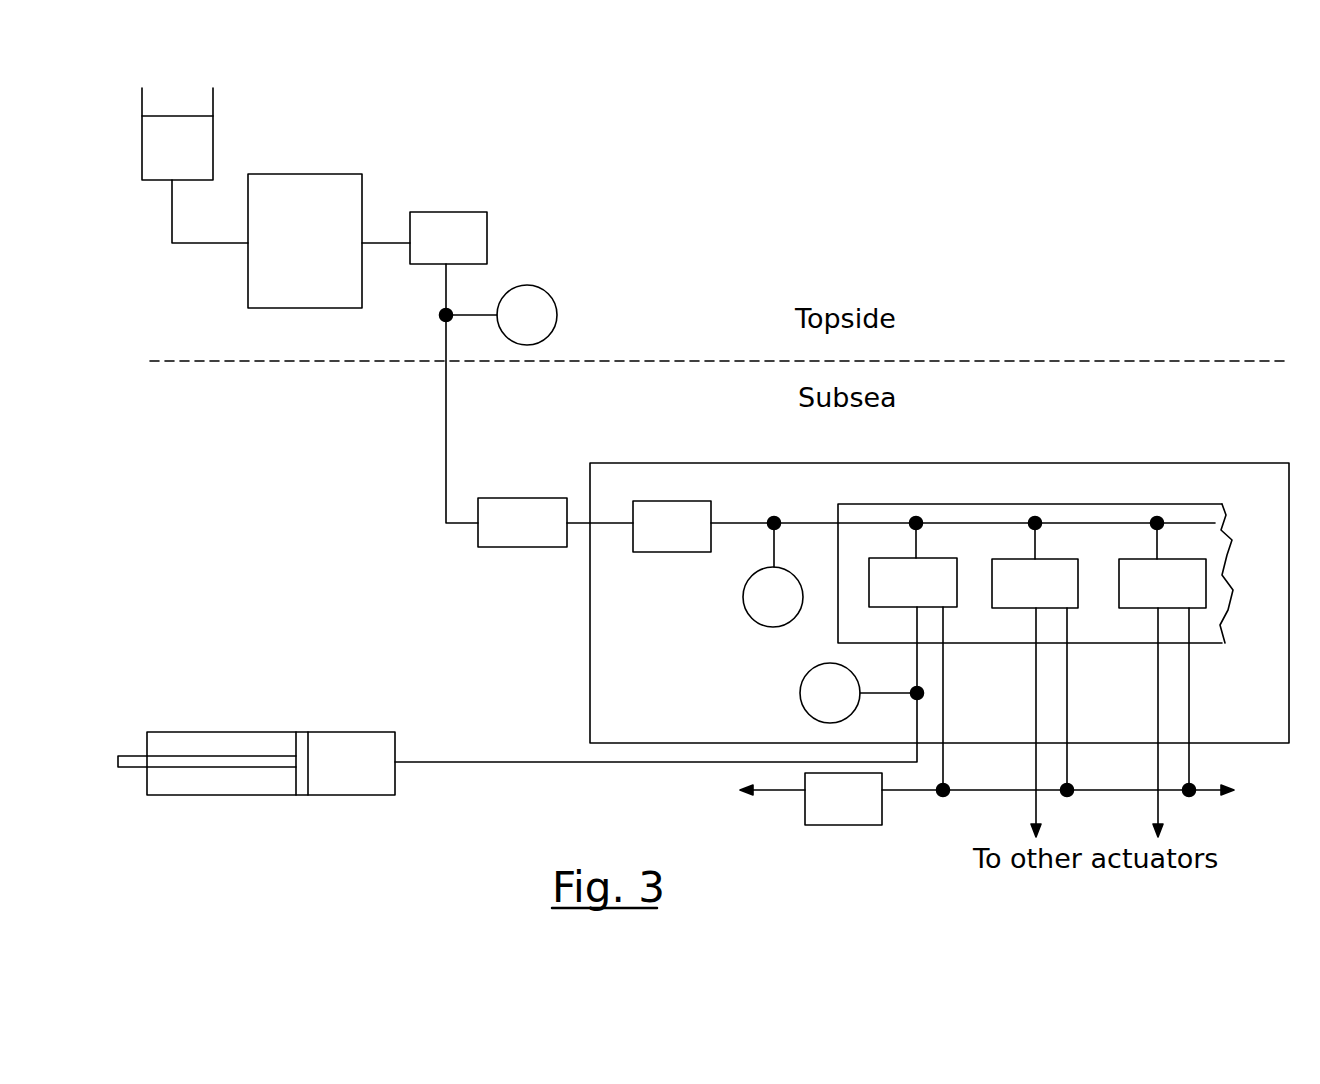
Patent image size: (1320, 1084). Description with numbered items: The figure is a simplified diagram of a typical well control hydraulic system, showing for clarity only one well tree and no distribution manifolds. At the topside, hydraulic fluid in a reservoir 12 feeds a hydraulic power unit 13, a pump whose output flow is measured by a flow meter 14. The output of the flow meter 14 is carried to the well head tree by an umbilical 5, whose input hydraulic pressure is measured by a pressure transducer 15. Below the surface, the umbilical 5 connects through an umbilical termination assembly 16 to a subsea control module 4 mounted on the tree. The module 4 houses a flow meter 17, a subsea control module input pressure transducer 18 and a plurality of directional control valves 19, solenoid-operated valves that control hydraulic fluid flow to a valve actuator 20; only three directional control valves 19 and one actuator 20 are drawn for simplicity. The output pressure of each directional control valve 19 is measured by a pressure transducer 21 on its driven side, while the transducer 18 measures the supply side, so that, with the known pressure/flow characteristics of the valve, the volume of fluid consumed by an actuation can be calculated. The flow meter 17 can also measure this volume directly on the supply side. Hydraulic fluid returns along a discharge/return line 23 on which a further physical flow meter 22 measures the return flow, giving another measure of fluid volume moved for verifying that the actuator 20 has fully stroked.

The subsea control module 4 is at (1216, 463).
The umbilical 5 is at (446, 412).
The reservoir 12 is at (213, 125).
The hydraulic power unit 13 is at (248, 277).
The flow meter 14 is at (487, 238).
The pressure transducer 15 is at (557, 315).
The umbilical termination assembly 16 is at (508, 548).
The flow meter 17 is at (655, 552).
The subsea control module input pressure transducer 18 is at (755, 625).
The directional control valves 19 is at (945, 608).
The actuator 20 is at (366, 732).
The pressure transducer 21 is at (800, 698).
The flow meter 22 is at (852, 826).
The discharge/return line 23 is at (917, 792).